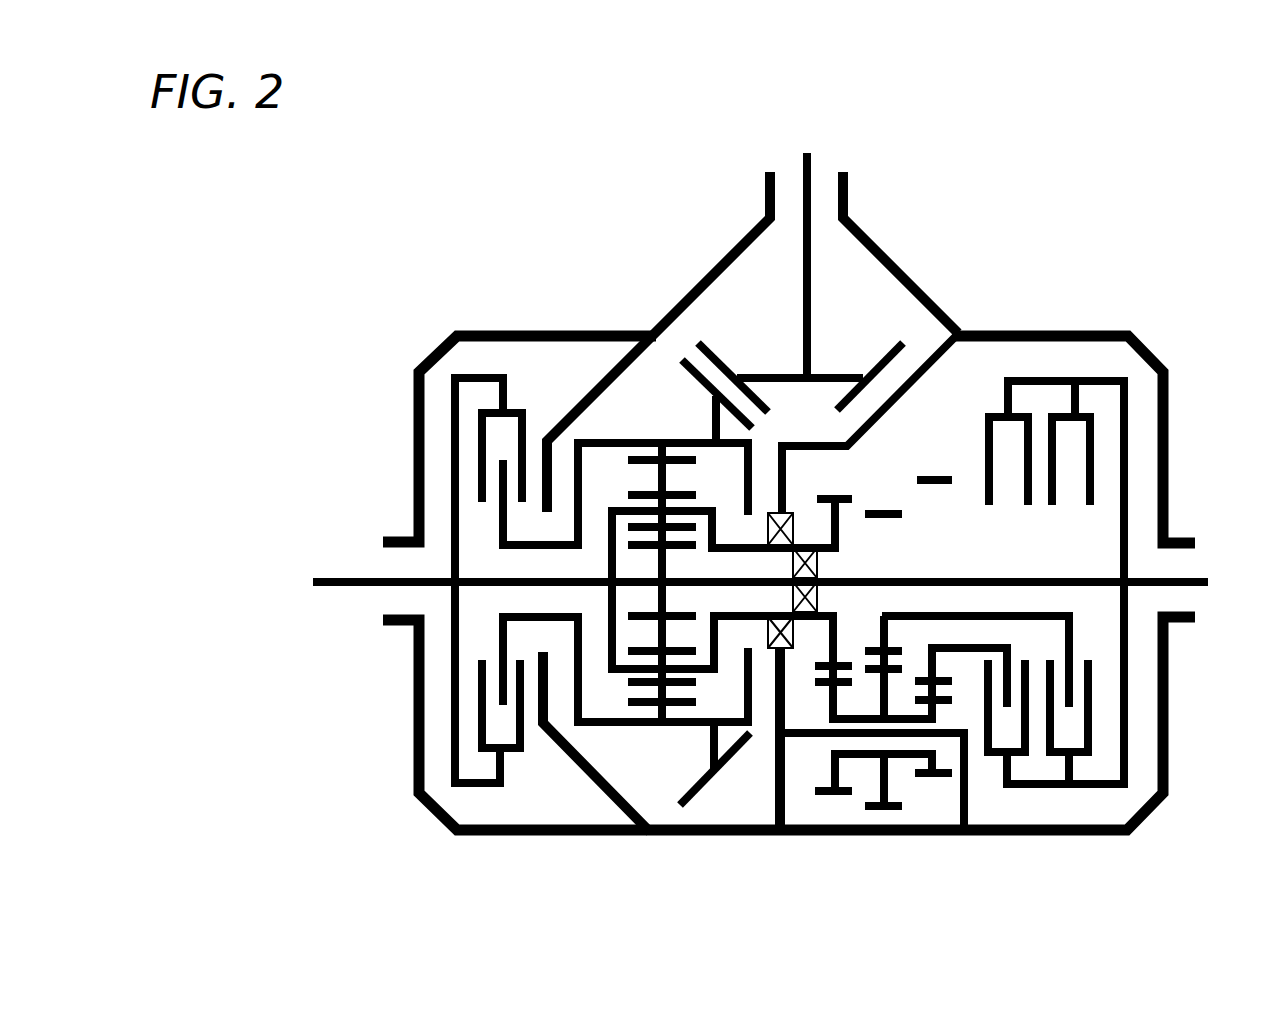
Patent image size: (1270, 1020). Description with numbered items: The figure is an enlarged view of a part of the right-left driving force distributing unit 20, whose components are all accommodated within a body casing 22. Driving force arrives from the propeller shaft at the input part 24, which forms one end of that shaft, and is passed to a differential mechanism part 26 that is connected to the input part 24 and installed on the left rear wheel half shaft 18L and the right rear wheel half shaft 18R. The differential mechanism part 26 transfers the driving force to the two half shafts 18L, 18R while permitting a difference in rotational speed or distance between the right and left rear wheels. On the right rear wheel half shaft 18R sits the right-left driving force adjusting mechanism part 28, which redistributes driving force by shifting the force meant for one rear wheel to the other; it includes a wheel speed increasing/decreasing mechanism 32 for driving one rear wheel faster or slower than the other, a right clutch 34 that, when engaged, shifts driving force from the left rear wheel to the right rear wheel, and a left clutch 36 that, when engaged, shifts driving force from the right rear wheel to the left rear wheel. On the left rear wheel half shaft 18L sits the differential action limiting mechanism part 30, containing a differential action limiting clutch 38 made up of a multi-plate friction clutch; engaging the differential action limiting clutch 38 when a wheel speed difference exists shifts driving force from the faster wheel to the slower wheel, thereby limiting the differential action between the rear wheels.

The left rear wheel half shaft 18L is at (347, 578).
The right rear wheel half shaft 18R is at (1205, 578).
The right-left driving force distributing unit 20 is at (1066, 240).
The body casing 22 is at (973, 323).
The input part 24 is at (834, 373).
The differential mechanism part 26 is at (670, 730).
The right-left driving force adjusting mechanism part 28 is at (1015, 790).
The differential action limiting mechanism part 30 is at (490, 793).
The wheel speed increasing/decreasing mechanism 32 is at (905, 772).
The right clutch 34 is at (1100, 375).
The left clutch 36 is at (1037, 375).
The differential action limiting clutch 38 is at (482, 457).